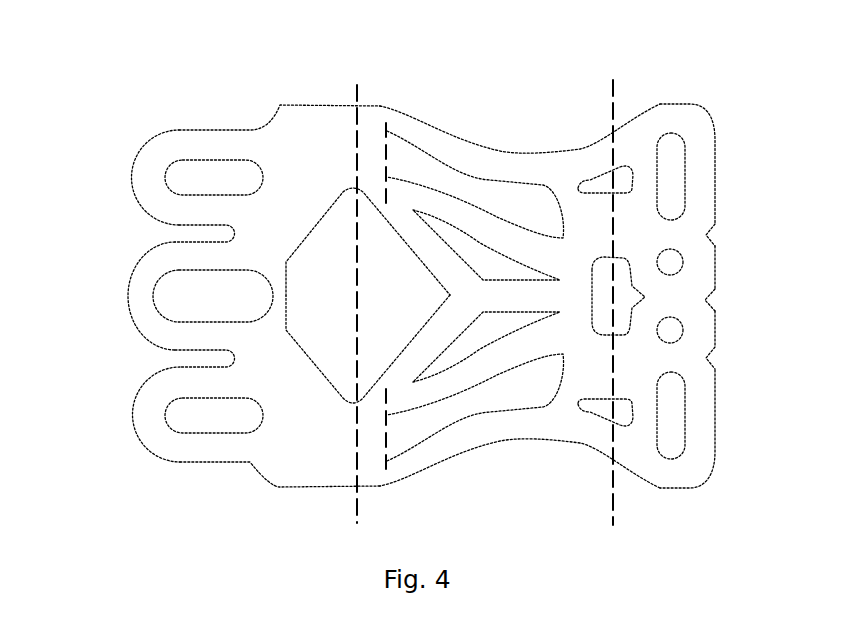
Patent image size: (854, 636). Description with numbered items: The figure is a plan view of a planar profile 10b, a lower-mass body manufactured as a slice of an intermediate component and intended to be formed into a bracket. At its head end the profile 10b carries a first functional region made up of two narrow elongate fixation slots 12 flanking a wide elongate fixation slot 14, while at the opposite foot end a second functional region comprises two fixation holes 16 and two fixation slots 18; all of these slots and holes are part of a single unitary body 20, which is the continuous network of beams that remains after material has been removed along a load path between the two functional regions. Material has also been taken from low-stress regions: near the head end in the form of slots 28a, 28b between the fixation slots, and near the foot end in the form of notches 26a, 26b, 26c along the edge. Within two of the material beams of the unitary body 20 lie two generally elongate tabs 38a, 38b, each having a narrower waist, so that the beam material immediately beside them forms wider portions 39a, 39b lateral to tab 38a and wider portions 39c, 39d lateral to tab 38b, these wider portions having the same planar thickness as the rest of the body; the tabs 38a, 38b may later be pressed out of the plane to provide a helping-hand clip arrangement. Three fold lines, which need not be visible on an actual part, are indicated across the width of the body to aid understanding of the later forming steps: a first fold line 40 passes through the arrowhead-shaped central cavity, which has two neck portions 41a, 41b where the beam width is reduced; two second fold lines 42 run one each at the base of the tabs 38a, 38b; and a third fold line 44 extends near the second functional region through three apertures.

The profile 10b is at (110, 74).
The narrow elongate fixation slot 12 is at (152, 172).
The wide elongate fixation slot 14 is at (152, 301).
The fixation hole 16 is at (685, 260).
The fixation slot 18 is at (686, 160).
The unitary body 20 is at (301, 128).
The notch 26a is at (707, 235).
The notch 26b is at (707, 300).
The notch 26c is at (707, 358).
The slot 28a is at (177, 229).
The slot 28b is at (177, 357).
The tab 38a is at (527, 193).
The tab 38b is at (535, 393).
The wider portion 39a is at (482, 162).
The wider portion 39b is at (495, 220).
The wider portion 39c is at (477, 377).
The wider portion 39d is at (495, 427).
The first fold line 40 is at (360, 97).
The neck portion 41a is at (347, 190).
The neck portion 41b is at (344, 402).
The second fold line 42 is at (388, 131).
The third fold line 44 is at (613, 103).